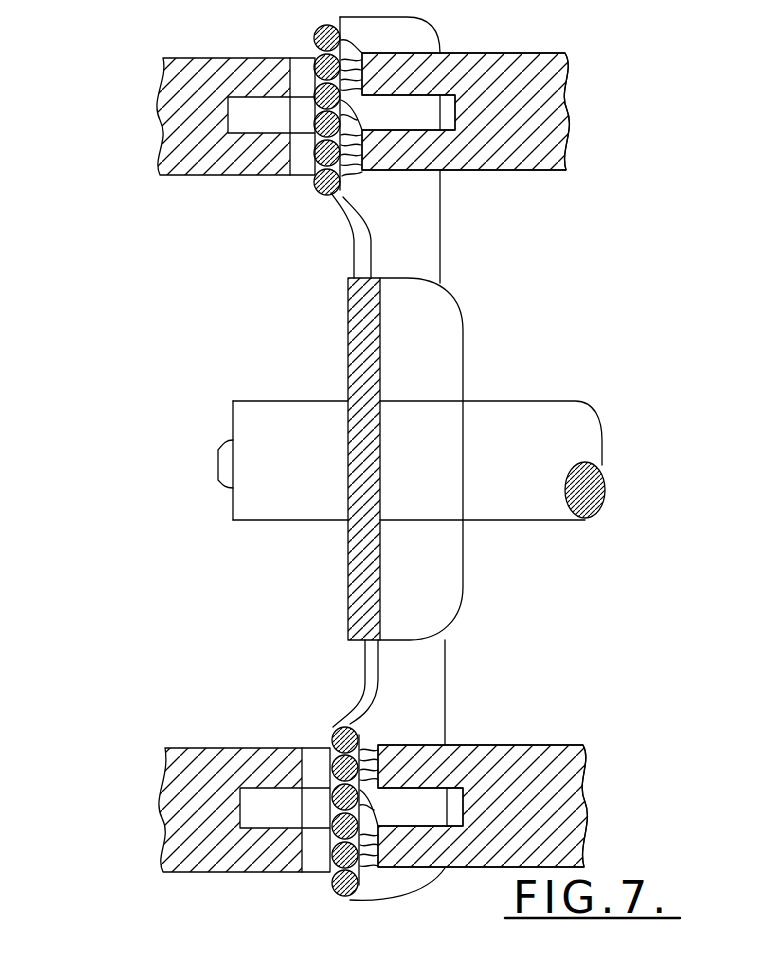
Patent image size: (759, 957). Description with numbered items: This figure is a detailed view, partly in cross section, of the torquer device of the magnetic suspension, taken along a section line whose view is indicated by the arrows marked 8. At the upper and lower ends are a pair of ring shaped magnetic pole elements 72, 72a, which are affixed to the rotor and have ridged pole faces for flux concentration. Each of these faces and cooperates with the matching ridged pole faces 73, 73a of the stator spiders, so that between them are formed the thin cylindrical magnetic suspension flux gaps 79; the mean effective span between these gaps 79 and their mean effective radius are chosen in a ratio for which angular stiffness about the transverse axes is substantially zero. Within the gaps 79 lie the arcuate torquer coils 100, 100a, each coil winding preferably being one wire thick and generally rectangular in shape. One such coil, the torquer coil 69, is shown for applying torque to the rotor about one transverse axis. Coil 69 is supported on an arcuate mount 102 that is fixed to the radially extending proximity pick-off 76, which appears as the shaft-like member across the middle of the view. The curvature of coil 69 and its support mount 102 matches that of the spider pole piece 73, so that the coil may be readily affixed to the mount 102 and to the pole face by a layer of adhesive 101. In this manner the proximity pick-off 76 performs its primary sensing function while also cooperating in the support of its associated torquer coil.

The ring shaped magnetic pole element 72 is at (236, 99).
The ridged pole face of stator spider 73 is at (522, 53).
The arcuate torquer coil 100 is at (318, 28).
The layer of adhesive 101 is at (347, 170).
The arcuate mount 102 is at (407, 278).
The torquer coil 69 is at (320, 253).
The magnetic suspension magnetic flux gap 79 is at (308, 176).
The proximity pick-off 76 is at (530, 408).
The ring shaped magnetic pole element 72a is at (184, 753).
The ridged pole face of stator spider 73a is at (508, 745).
The arcuate torquer coil 100a is at (330, 728).
The section line 8- 8 is at (110, 377).